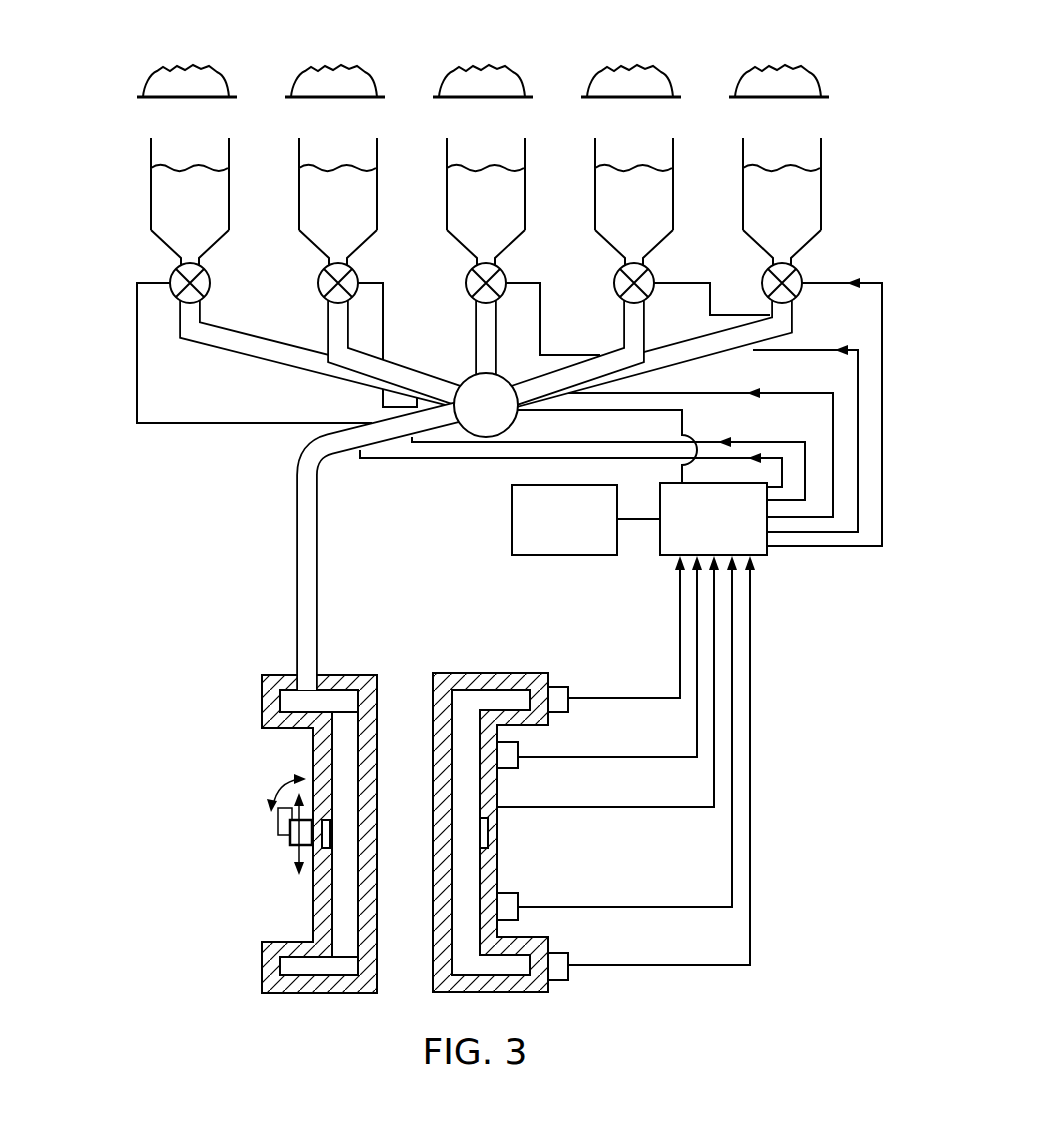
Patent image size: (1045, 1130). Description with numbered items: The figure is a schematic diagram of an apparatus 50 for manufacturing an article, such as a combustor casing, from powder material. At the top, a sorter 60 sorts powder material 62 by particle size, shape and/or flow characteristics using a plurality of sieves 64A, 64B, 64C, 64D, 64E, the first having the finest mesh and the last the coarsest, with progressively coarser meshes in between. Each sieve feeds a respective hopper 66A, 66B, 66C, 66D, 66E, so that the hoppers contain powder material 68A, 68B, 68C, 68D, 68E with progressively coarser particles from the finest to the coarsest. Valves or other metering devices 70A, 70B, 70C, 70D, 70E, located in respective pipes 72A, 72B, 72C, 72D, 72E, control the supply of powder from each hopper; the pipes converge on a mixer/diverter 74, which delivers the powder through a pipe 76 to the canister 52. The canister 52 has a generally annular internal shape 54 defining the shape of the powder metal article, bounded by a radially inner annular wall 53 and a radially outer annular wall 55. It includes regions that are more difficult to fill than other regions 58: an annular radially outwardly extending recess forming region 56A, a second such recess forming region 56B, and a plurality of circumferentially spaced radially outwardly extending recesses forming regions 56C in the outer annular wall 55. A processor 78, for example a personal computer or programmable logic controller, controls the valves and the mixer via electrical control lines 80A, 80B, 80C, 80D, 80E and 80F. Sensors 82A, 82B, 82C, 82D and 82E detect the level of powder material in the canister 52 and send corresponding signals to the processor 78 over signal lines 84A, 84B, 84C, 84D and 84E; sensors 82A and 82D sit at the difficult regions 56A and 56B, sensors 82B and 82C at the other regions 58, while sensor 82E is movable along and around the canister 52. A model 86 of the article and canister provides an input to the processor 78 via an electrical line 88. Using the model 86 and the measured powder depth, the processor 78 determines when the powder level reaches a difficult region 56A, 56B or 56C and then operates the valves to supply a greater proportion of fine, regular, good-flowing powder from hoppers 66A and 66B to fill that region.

The apparatus 50 is at (136, 560).
The canister 52 is at (317, 905).
The radially inner annular wall 53 is at (447, 792).
The internal shape 54 is at (343, 900).
The radially outer annular wall 55 is at (322, 744).
The region more difficult to fill 56A is at (297, 965).
The region more difficult to fill 56B is at (287, 702).
The regions more difficult to fill 56C is at (497, 838).
The other regions 58 is at (467, 793).
The sorter 60 is at (96, 87).
The powder material 62 is at (196, 70).
The sieve 64A is at (164, 120).
The sieve 64B is at (312, 120).
The sieve 64C is at (460, 120).
The sieve 64D is at (607, 120).
The sieve 64E is at (756, 120).
The hopper 66A is at (160, 254).
The hopper 66B is at (308, 254).
The hopper 66C is at (456, 254).
The hopper 66D is at (603, 254).
The hopper 66E is at (752, 254).
The powder material 68A is at (158, 184).
The powder material 68B is at (306, 184).
The powder material 68C is at (454, 184).
The powder material 68D is at (601, 184).
The powder material 68E is at (750, 184).
The valve 70A is at (170, 288).
The valve 70B is at (318, 296).
The valve 70C is at (467, 298).
The valve 70D is at (622, 298).
The valve 70E is at (800, 290).
The pipe 72A is at (217, 338).
The pipe 72B is at (333, 337).
The pipe 72C is at (488, 348).
The pipe 72D is at (640, 326).
The pipe 72E is at (785, 318).
The mixer/diverter 74 is at (518, 413).
The pipe 76 is at (297, 538).
The processor 78 is at (757, 547).
The electrical control line 80A is at (188, 424).
The electrical control line 80B is at (465, 446).
The electrical control line 80C is at (783, 393).
The electrical control line 80D is at (860, 367).
The electrical control line 80E is at (848, 280).
The electrical control line 80F is at (684, 425).
The sensor 82A is at (573, 972).
The sensor 82B is at (520, 915).
The sensor 82C is at (520, 747).
The sensor 82D is at (565, 685).
The sensor 82E is at (290, 845).
The signal line 84A is at (708, 965).
The signal line 84B is at (672, 908).
The signal line 84C is at (700, 740).
The signal line 84D is at (684, 622).
The signal line 84E is at (716, 792).
The model 86 is at (596, 547).
The electrical line 88 is at (629, 523).